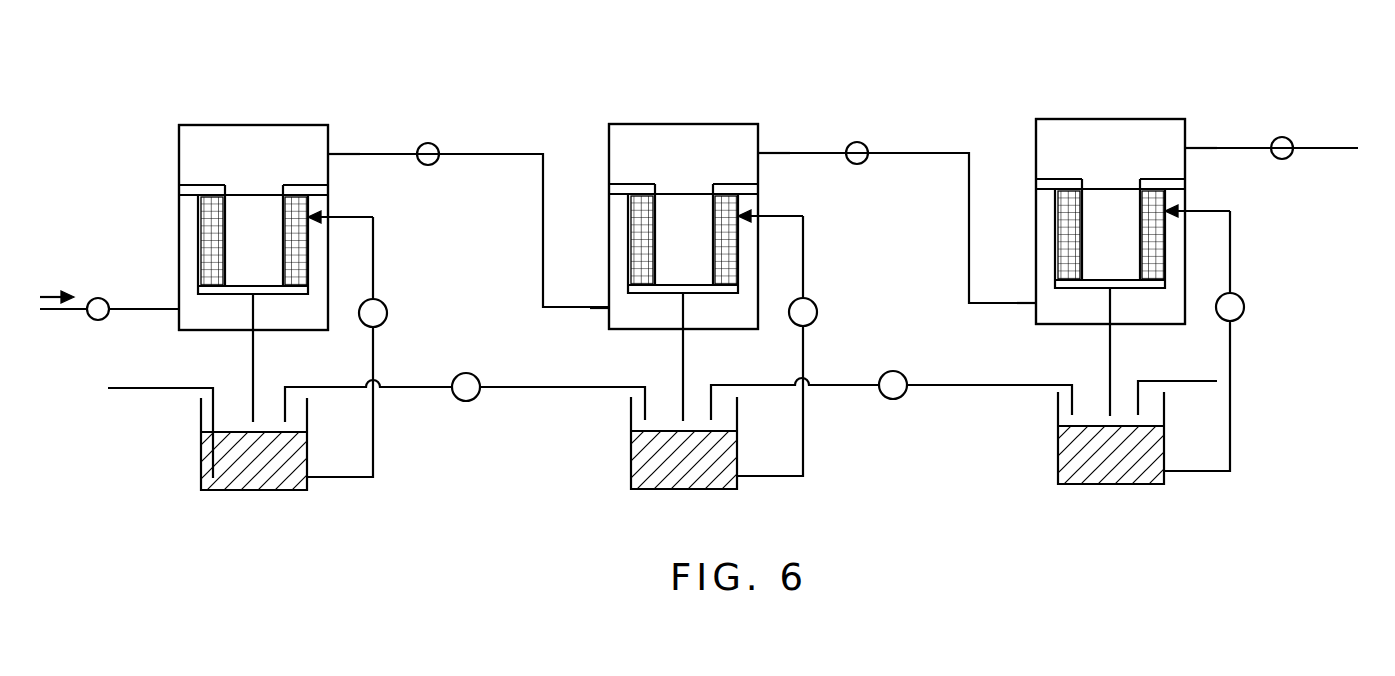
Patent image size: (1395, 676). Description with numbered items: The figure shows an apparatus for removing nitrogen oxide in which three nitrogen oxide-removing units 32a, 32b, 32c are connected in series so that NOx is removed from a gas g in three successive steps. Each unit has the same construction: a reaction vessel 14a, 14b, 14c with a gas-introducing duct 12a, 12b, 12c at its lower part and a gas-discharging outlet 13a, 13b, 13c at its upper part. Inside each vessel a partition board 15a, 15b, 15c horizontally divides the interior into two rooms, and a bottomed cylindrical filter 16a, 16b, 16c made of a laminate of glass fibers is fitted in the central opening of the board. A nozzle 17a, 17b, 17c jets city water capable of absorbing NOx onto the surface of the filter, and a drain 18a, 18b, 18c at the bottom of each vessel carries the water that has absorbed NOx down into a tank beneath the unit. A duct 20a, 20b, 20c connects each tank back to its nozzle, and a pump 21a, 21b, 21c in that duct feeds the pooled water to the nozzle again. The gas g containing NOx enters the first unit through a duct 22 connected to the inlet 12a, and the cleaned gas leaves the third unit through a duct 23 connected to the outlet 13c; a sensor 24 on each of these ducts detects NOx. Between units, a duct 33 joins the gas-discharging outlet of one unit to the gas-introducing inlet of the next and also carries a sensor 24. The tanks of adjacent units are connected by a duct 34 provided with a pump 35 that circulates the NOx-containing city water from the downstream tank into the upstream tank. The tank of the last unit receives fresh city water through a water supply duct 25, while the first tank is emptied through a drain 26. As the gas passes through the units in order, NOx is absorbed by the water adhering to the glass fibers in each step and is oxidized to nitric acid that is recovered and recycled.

The gas-introducing duct 12a is at (177, 326).
The gas-introducing duct 12b is at (579, 337).
The gas-introducing duct 12c is at (1006, 333).
The gas-discharging outlet 13a is at (330, 148).
The gas-discharging outlet 13b is at (786, 123).
The gas-discharging outlet 13c is at (1210, 120).
The reaction vessel 14a is at (170, 141).
The reaction vessel 14b is at (659, 203).
The reaction vessel 14c is at (1085, 200).
The partition board 15a is at (195, 188).
The partition board 15b is at (683, 165).
The partition board 15c is at (1110, 160).
The bottomed cylindrical filter 16a is at (205, 215).
The bottomed cylindrical filter 16b is at (646, 239).
The bottomed cylindrical filter 16c is at (1072, 234).
The nozzle 17a is at (322, 212).
The nozzle 17b is at (782, 197).
The nozzle 17c is at (1207, 190).
The drain 18a is at (256, 362).
The drain 18b is at (646, 357).
The drain 18c is at (1074, 352).
The duct 20a is at (375, 236).
The duct 20b is at (808, 342).
The duct 20c is at (1234, 337).
The pump 21a is at (384, 302).
The pump 21b is at (840, 293).
The pump 21c is at (1266, 289).
The duct 22 is at (65, 317).
The duct 23 is at (1330, 150).
The sensor 24 is at (100, 296).
The water supply duct 25 is at (1196, 380).
The drain 26 is at (135, 390).
The nitrogen oxide-removing unit 32a is at (313, 118).
The nitrogen oxide-removing unit 32b is at (700, 181).
The nitrogen oxide-removing unit 32c is at (1125, 176).
The duct 33 is at (541, 172).
The duct 34 is at (525, 389).
The pump 35 is at (466, 372).
The gas g is at (50, 292).